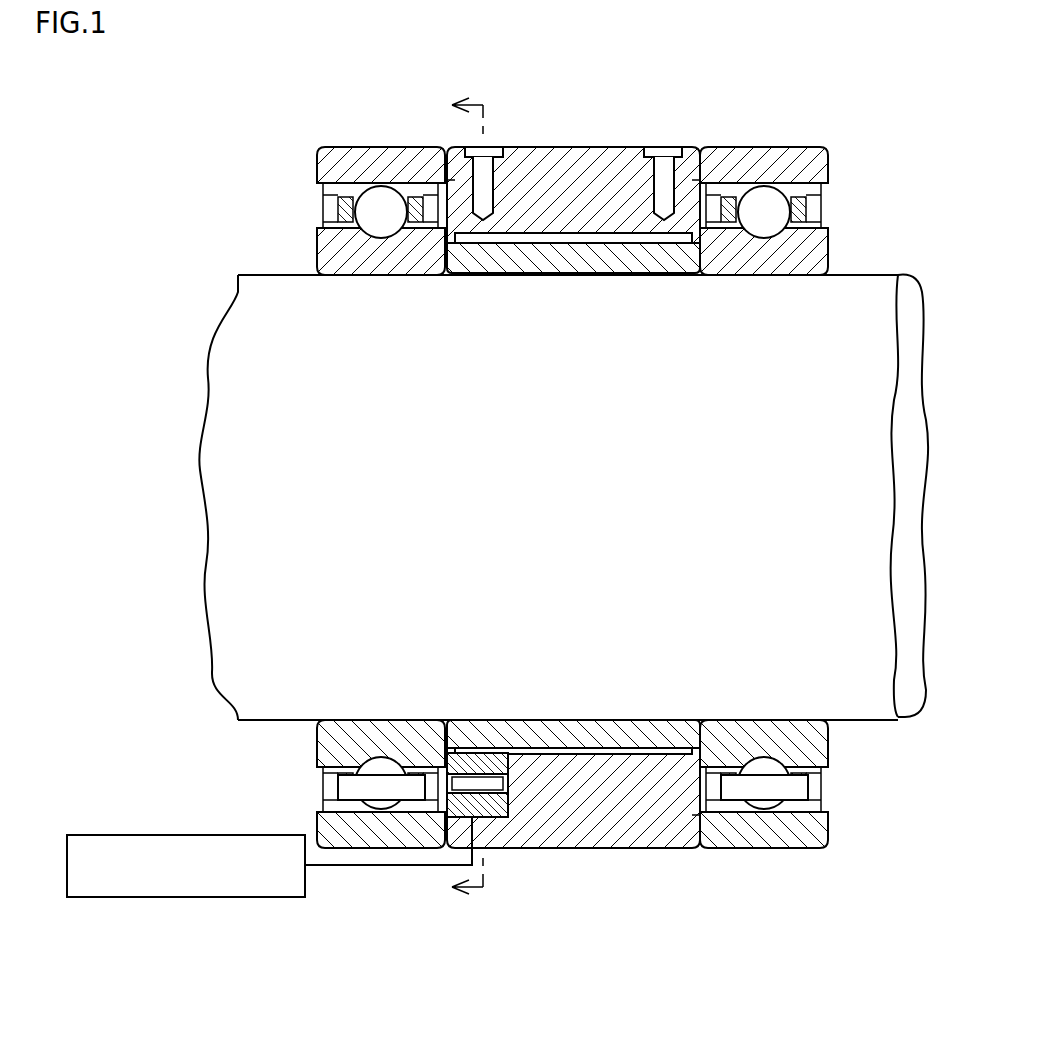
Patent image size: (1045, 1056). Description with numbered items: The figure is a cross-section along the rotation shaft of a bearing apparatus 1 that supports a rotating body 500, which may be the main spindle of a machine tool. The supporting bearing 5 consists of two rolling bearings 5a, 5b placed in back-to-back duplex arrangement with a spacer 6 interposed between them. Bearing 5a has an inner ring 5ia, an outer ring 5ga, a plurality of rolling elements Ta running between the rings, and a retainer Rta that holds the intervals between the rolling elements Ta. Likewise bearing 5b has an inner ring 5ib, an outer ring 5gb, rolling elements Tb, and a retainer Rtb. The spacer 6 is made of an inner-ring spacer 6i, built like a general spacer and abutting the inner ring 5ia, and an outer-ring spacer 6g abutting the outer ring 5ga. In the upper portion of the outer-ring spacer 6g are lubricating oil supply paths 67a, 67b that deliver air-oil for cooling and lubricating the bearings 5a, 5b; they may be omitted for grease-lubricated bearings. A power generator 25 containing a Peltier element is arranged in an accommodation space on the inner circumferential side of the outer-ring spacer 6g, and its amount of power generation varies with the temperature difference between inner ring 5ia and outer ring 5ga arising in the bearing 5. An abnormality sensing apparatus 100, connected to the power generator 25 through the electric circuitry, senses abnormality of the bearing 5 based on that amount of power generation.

The bearing apparatus 1 is at (240, 90).
The bearing 5 is at (572, 563).
The bearing 5a is at (416, 852).
The bearing 5b is at (742, 852).
The outer ring 5ga is at (365, 165).
The outer ring 5gb is at (762, 165).
The inner ring 5ia is at (340, 253).
The inner ring 5ib is at (808, 254).
The rolling element Ta is at (378, 226).
The rolling element Tb is at (768, 226).
The retainer Rta is at (342, 210).
The retainer Rtb is at (808, 210).
The spacer 6 is at (573, 535).
The outer-ring spacer 6g is at (558, 818).
The inner-ring spacer 6i is at (598, 735).
The lubricating oil supply path 67a is at (485, 165).
The lubricating oil supply path 67b is at (661, 176).
The power generator 25 is at (496, 805).
The abnormality sensing apparatus 100 is at (183, 835).
The rotating body 500 is at (860, 722).